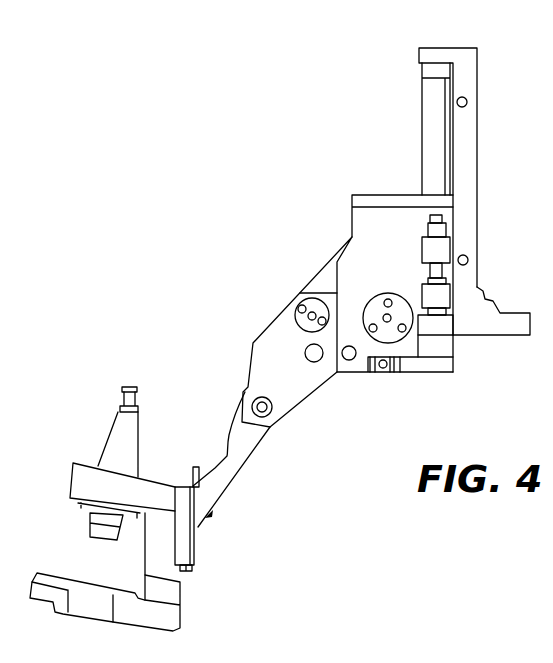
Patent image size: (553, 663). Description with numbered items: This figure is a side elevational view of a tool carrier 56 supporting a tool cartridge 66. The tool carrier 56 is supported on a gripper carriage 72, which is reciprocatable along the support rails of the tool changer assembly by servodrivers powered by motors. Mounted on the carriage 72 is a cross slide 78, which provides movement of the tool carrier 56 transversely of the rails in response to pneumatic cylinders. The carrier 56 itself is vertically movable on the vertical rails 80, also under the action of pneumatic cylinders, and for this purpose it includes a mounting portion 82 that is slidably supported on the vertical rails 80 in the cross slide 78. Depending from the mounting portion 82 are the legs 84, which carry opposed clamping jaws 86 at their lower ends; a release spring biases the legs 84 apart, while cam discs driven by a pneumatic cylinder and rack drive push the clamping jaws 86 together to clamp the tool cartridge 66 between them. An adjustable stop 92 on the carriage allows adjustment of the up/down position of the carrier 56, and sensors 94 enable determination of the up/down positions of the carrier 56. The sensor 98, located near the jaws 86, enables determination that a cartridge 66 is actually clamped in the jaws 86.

The tool carrier 56 is at (352, 235).
The tool cartridge 66 is at (74, 477).
The gripper carriage 72 is at (484, 147).
The cross slide 78 is at (475, 336).
The vertical rail 80 is at (432, 157).
The mounting portion 82 is at (352, 273).
The depending leg 84 is at (275, 415).
The clamping jaw 86 is at (187, 543).
The adjustable stop 92 is at (442, 248).
The sensor 94 is at (467, 99).
The sensor 98 is at (193, 468).